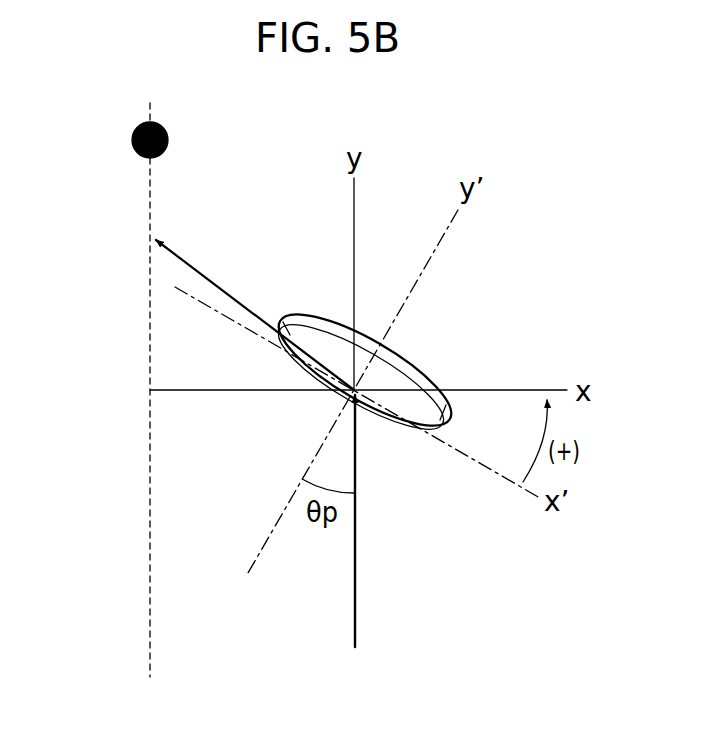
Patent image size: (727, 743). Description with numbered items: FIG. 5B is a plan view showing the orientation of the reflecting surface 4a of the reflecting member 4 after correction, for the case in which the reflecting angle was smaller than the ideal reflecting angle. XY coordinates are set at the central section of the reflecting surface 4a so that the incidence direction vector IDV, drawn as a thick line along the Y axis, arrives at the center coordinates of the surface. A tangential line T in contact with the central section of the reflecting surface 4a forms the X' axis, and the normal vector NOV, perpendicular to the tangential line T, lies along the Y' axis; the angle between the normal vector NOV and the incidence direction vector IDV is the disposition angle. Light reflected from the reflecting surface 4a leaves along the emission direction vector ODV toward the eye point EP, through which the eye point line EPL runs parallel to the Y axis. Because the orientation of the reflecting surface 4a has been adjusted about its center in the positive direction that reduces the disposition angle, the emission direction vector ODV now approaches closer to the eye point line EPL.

The reflecting member 4 is at (387, 394).
The reflecting surface 4a is at (405, 414).
The eye point EP is at (138, 123).
The eye point line EPL is at (150, 518).
The emission direction vector ODV is at (208, 280).
The normal vector NOV is at (273, 532).
The incidence direction vector IDV is at (356, 598).
The tangential line T is at (505, 475).